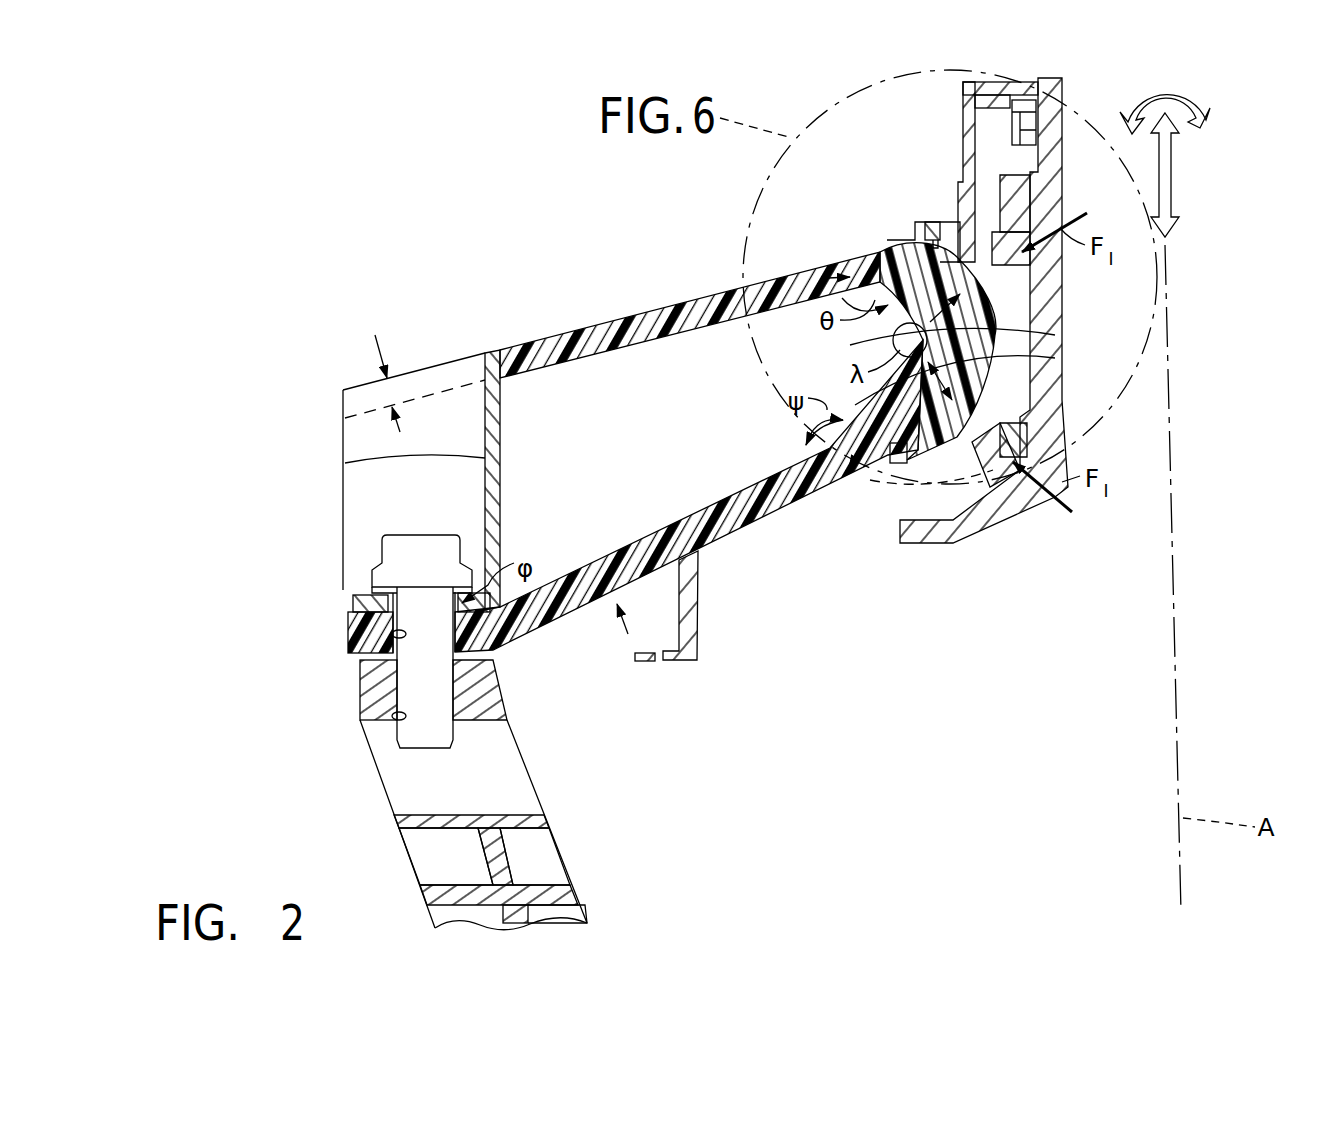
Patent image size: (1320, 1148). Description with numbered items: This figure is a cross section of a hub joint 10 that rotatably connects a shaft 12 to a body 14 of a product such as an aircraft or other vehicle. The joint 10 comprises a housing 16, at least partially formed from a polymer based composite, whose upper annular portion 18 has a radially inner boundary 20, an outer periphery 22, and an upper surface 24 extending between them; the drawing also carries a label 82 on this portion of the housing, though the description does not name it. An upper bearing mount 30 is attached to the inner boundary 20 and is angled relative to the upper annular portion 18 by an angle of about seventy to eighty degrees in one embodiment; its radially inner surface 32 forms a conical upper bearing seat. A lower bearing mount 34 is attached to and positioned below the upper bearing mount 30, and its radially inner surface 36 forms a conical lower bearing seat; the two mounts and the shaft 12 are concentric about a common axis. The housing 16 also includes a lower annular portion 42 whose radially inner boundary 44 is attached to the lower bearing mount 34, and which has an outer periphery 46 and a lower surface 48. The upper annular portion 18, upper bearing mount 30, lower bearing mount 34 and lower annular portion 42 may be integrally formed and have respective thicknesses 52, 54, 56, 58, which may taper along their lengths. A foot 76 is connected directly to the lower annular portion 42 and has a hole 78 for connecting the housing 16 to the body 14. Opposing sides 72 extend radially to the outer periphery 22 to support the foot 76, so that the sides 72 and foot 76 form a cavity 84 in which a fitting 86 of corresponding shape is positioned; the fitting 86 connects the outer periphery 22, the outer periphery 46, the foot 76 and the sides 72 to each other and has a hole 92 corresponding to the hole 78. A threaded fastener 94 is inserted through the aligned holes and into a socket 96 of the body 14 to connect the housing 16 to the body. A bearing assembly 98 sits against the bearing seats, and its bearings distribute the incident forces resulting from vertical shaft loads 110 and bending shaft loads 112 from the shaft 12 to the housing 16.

The hub joint 10 is at (288, 183).
The shaft 12 is at (1063, 283).
The body 14 is at (360, 683).
The housing 16 is at (541, 257).
The upper annular portion 18 is at (660, 308).
The radially inner boundary 20 is at (858, 262).
The outer periphery 22 is at (343, 406).
The upper surface 24 is at (540, 338).
The upper bearing mount 30 is at (888, 322).
The radially inner surface 32 is at (960, 218).
The lower bearing mount 34 is at (860, 412).
The radially inner surface 36 is at (1018, 512).
The lower annular portion 42 is at (710, 510).
The radially inner boundary 44 is at (835, 490).
The outer periphery 46 is at (496, 650).
The lower surface 48 is at (722, 553).
The thickness 52 is at (380, 366).
The thickness 54 is at (1030, 340).
The thickness 56 is at (1045, 362).
The thickness 58 is at (590, 548).
The sides 72 is at (413, 498).
The foot 76 is at (348, 620).
The hole 78 is at (393, 632).
The outer surface 82 is at (352, 388).
The cavity 84 is at (368, 505).
The fitting 86 is at (345, 463).
The hole 92 is at (397, 597).
The threaded fastener 94 is at (455, 536).
The socket 96 is at (400, 722).
The bearing assembly 98 is at (985, 200).
The vertical shaft loads 110 is at (1172, 176).
The bending shaft loads 112 is at (1195, 92).